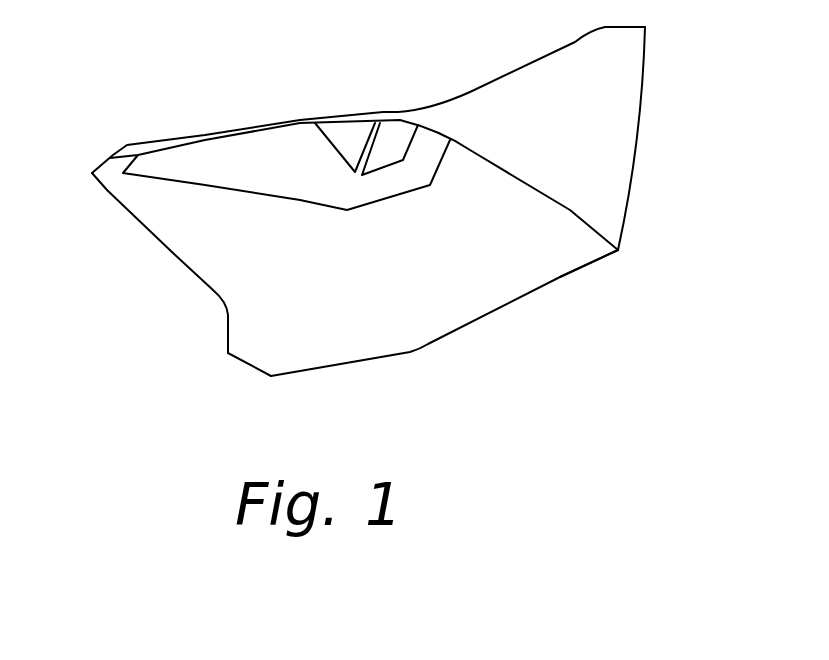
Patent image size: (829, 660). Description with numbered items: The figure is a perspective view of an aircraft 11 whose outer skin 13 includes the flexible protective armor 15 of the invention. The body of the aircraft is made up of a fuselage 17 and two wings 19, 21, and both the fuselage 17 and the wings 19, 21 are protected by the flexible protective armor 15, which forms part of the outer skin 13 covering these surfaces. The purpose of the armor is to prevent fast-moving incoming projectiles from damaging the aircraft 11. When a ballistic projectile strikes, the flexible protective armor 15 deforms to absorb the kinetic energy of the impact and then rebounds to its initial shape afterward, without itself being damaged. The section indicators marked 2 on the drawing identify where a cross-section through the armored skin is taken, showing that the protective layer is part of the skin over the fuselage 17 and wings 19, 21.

The section line for FIG. 2 is at (220, 318).
The aircraft 11 is at (135, 215).
The outer skin 13 is at (572, 272).
The flexible protective armor 15 is at (473, 308).
The fuselage 17 is at (192, 250).
The wing 19 is at (630, 67).
The wing 21 is at (270, 352).